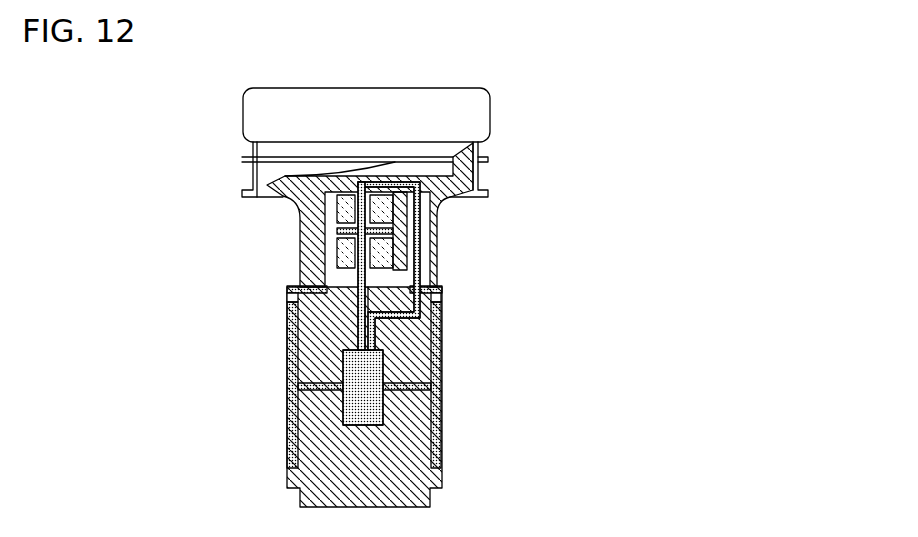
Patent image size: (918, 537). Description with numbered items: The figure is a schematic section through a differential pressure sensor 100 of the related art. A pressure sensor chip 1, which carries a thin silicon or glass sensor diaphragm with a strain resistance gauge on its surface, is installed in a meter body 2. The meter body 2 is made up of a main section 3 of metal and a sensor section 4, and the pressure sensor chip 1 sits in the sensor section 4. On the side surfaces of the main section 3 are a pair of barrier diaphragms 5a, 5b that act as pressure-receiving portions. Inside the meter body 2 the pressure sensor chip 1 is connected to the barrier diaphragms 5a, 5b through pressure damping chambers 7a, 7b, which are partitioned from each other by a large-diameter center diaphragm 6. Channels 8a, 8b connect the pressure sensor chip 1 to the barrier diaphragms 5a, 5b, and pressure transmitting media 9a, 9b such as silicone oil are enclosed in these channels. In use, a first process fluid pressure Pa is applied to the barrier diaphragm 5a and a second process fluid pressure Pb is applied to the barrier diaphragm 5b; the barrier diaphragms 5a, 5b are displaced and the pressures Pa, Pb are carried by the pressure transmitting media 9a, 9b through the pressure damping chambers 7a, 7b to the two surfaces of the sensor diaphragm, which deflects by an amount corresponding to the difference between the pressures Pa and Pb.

The differential pressure sensor 100 is at (532, 109).
The pressure sensor chip 1 is at (398, 231).
The meter body 2 is at (467, 183).
The main section 3 is at (398, 479).
The sensor section 4 is at (312, 214).
The barrier diaphragm 5a is at (290, 338).
The barrier diaphragm 5b is at (443, 333).
The center diaphragm 6 is at (383, 372).
The pressure damping chamber 7a is at (345, 404).
The pressure damping chamber 7b is at (386, 410).
The channel 8a is at (305, 292).
The channel 8b is at (440, 292).
The pressure transmitting medium 9a is at (352, 248).
The pressure transmitting medium 9b is at (421, 255).
The first process fluid pressure Pa is at (274, 392).
The second process fluid pressure Pb is at (456, 392).